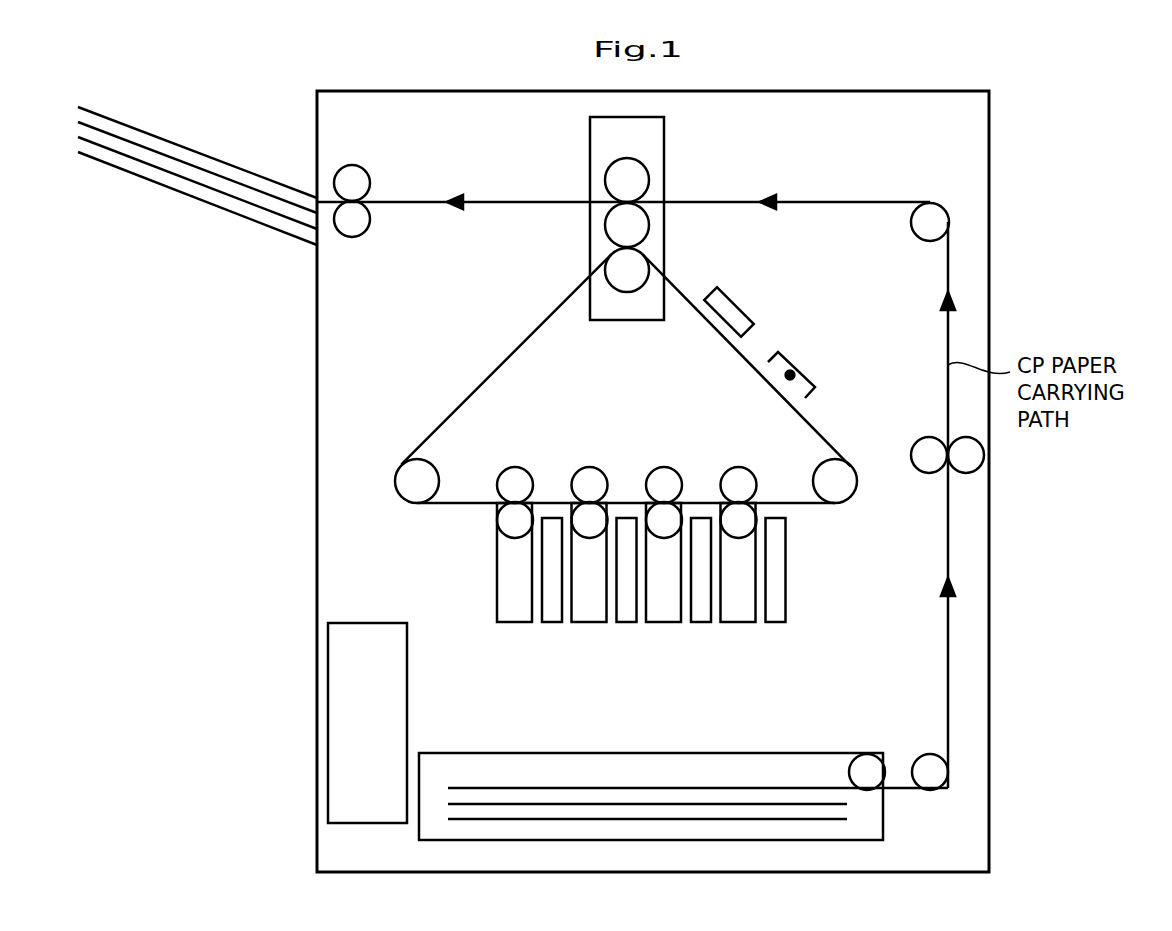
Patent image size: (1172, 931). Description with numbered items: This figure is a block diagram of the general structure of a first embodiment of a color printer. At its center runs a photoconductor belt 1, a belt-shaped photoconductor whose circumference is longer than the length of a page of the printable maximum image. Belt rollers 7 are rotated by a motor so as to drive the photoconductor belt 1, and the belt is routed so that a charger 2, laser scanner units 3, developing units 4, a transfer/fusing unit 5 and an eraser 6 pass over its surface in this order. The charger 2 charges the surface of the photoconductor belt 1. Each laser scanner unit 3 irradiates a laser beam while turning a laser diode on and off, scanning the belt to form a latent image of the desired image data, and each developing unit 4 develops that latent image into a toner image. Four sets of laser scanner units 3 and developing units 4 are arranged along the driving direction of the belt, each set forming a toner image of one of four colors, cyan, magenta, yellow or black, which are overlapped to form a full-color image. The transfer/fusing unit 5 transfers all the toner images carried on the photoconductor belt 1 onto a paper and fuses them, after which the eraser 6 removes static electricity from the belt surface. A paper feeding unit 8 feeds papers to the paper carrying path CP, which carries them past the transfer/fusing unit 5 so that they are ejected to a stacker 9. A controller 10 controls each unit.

The photoconductor belt 1 is at (503, 340).
The charger 2 is at (795, 365).
The laser scanner unit 3 is at (786, 598).
The developing unit 4 is at (733, 623).
The transfer/fusing unit 5 is at (664, 140).
The eraser 6 is at (737, 307).
The belt roller 7 is at (398, 492).
The paper feeding unit 8 is at (480, 752).
The stacker 9 is at (150, 182).
The controller 10 is at (328, 727).